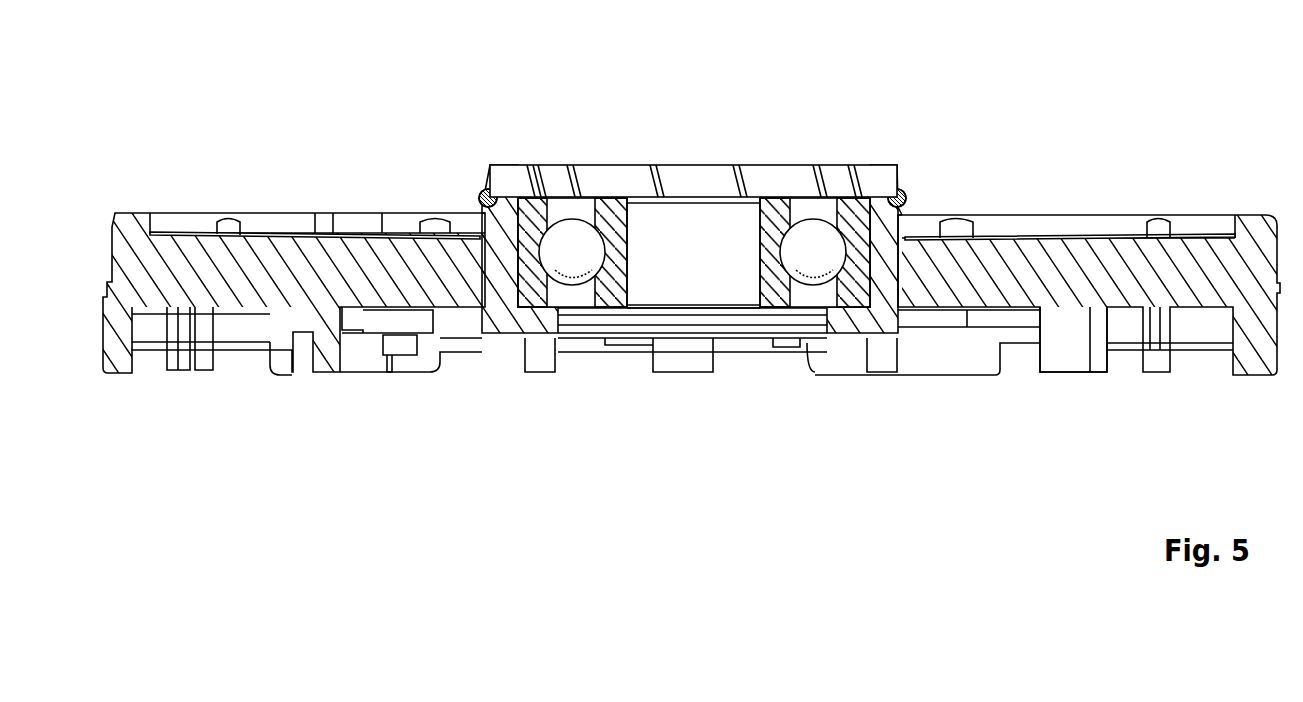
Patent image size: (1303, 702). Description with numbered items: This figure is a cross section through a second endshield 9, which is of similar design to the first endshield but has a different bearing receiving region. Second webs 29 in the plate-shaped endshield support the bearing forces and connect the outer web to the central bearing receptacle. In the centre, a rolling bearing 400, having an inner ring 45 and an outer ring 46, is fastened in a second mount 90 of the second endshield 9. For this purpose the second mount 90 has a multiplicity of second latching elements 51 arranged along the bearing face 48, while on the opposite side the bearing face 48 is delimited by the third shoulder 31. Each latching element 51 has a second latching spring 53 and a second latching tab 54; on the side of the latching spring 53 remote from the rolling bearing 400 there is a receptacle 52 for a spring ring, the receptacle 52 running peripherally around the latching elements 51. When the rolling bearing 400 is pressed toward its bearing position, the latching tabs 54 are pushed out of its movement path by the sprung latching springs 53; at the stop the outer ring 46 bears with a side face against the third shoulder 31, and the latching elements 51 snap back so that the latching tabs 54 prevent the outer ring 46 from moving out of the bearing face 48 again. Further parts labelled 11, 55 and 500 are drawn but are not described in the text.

The second endshield 9 is at (973, 448).
The housing wall 11 is at (478, 194).
The second webs 29 is at (430, 227).
The third shoulder 31 is at (548, 330).
The inner ring 45 is at (772, 298).
The outer ring 46 is at (855, 265).
The bearing face 48 is at (878, 338).
The second latching elements 51 is at (693, 103).
The receptacle 52 is at (485, 190).
The second latching spring 53 is at (528, 180).
The second latching tab 54 is at (541, 190).
The hub 55 is at (512, 290).
The second mount 90 is at (1080, 285).
The rolling bearing 400 is at (692, 117).
The bearing unit 500 is at (917, 143).